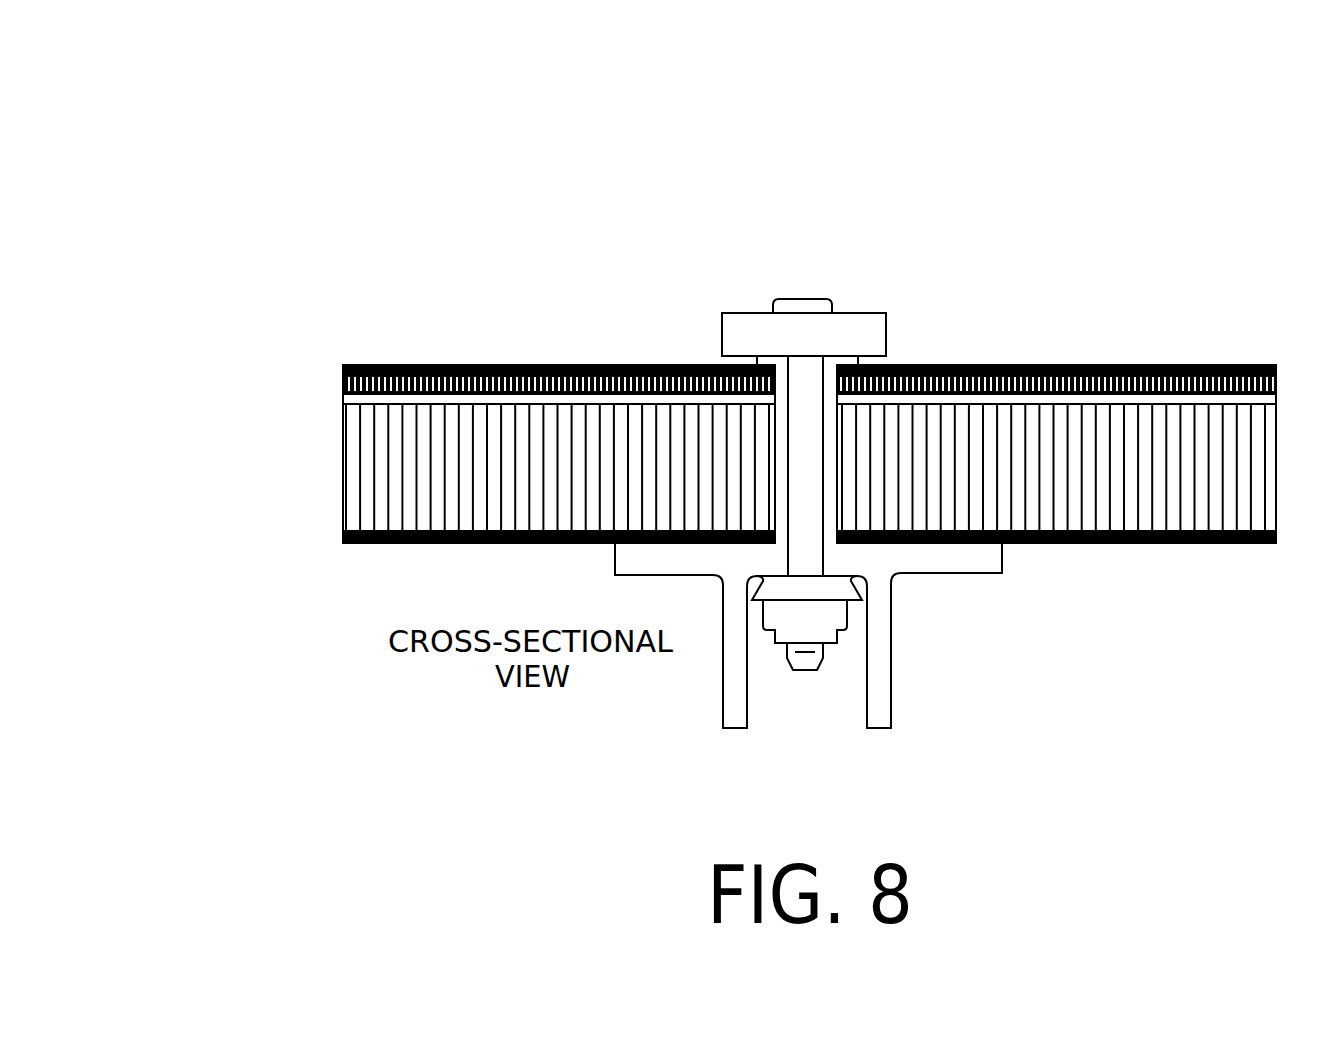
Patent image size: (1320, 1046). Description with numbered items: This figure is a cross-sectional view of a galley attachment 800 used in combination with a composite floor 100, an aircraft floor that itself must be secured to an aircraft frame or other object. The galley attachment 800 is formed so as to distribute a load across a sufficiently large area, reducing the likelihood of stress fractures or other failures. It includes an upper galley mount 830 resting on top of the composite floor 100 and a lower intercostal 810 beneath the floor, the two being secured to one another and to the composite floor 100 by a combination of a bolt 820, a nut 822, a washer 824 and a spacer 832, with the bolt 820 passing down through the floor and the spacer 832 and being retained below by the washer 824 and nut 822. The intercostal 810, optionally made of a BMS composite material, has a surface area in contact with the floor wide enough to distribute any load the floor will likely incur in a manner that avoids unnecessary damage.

The galley attachment 800 is at (737, 203).
The composite floor 100 is at (285, 372).
The upper galley mount 830 is at (753, 313).
The bolt 820 is at (808, 300).
The spacer 832 is at (773, 445).
The lower intercostal 810 is at (1003, 560).
The washer 824 is at (848, 588).
The nut 822 is at (847, 633).